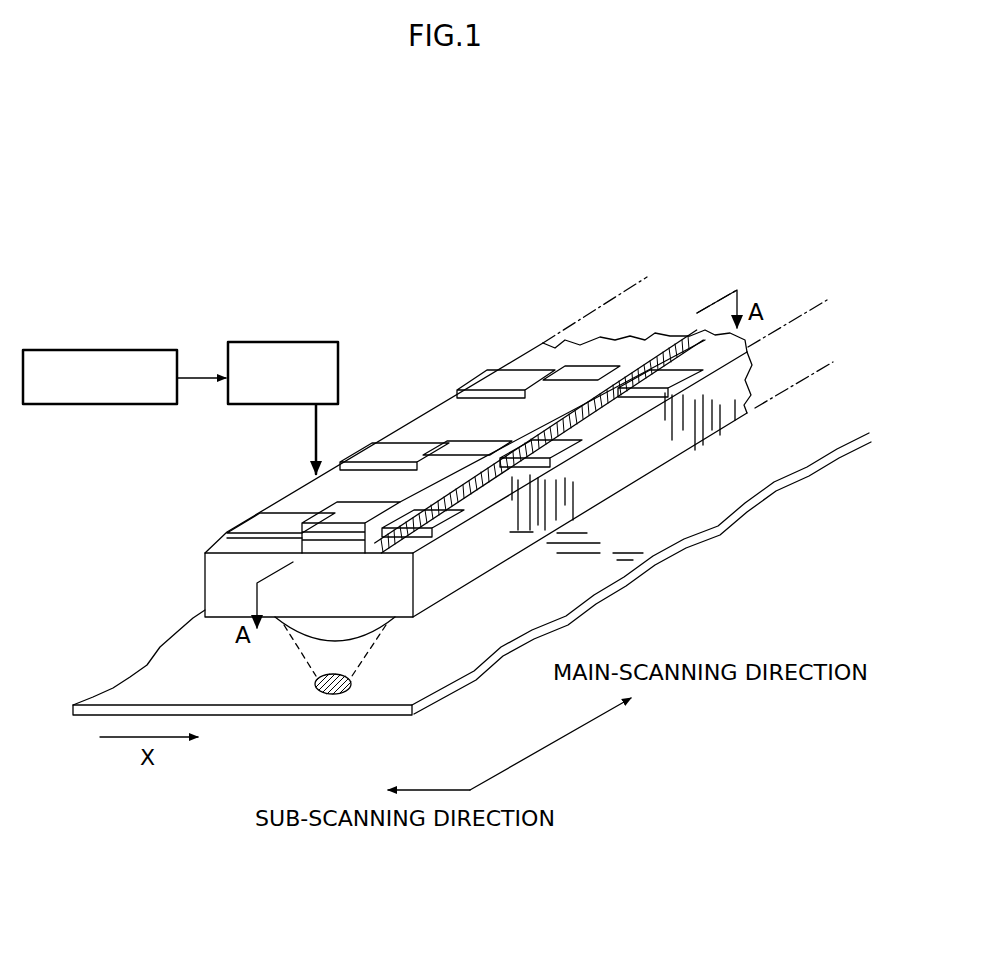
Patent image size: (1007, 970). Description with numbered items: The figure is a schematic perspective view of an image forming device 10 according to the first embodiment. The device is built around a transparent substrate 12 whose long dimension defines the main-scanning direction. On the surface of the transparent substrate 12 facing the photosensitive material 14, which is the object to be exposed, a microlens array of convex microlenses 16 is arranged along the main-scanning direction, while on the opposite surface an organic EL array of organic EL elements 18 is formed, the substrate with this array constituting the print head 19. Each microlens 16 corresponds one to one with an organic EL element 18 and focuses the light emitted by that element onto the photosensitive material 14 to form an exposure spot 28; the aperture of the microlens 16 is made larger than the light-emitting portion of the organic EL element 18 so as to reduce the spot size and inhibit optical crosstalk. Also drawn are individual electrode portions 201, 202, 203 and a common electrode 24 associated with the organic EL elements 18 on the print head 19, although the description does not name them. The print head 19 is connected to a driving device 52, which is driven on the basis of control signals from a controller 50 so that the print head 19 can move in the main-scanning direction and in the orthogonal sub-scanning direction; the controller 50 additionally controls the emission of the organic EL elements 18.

The image forming device 10 is at (337, 266).
The transparent substrate 12 is at (222, 575).
The photosensitive material 14 is at (125, 680).
The convex microlens 16 is at (373, 621).
The organic EL element 18 is at (339, 516).
The print head 19 is at (653, 482).
The individual electrode 20-1 201 is at (257, 513).
The individual electrode 20-2 202 is at (377, 452).
The individual electrode 20-3 203 is at (487, 380).
The common electrode 24 is at (647, 338).
The exposure spot 28 is at (335, 694).
The controller 50 is at (128, 348).
The driving device 52 is at (279, 342).